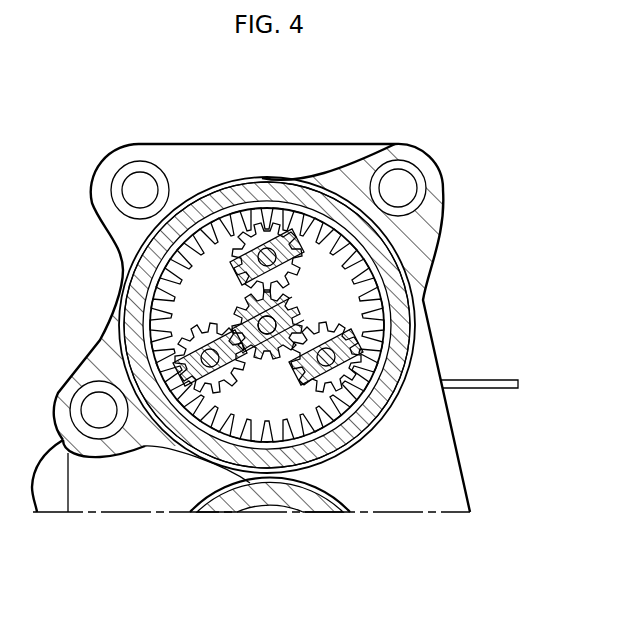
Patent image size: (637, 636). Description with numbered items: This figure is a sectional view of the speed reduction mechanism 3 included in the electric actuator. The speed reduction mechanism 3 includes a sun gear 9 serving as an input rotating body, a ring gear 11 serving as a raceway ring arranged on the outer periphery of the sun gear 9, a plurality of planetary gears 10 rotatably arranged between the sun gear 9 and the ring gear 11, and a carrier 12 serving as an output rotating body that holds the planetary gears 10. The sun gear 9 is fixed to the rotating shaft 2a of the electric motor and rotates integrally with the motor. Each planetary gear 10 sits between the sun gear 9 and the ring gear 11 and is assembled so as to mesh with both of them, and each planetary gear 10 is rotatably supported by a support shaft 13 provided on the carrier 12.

The speed reduction mechanism 3 is at (205, 210).
The rotating shaft 2a is at (300, 315).
The sun gear 9 is at (267, 345).
The planetary gears 10 is at (258, 222).
The ring gear 11 is at (147, 313).
The carrier 12 is at (203, 280).
The support shaft 13 is at (347, 388).